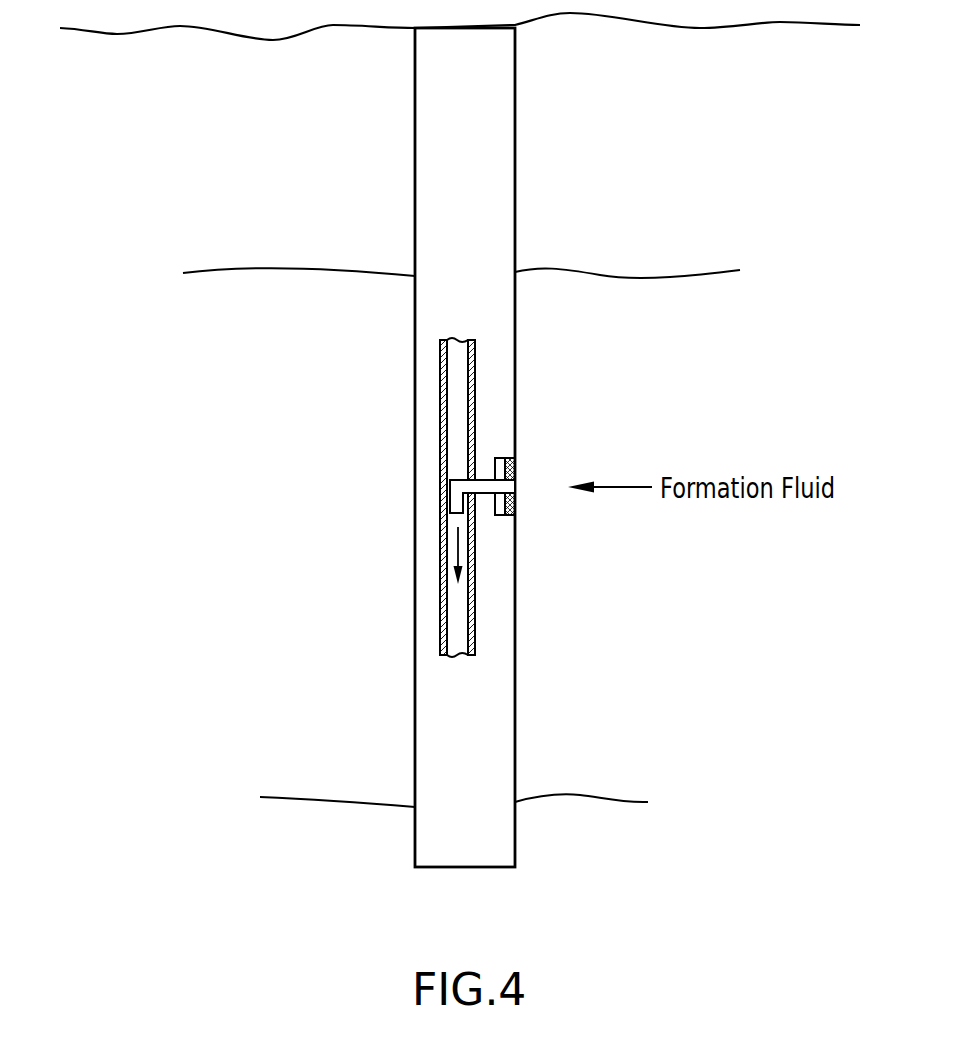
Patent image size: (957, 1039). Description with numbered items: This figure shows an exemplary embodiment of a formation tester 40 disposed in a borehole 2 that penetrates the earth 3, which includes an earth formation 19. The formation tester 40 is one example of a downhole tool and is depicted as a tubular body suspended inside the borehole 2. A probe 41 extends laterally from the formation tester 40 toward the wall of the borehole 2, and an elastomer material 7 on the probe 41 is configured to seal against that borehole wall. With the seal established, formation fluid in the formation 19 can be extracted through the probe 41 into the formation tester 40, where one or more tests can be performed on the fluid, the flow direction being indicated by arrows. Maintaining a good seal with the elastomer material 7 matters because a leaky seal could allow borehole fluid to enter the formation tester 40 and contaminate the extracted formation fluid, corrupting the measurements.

The borehole 2 is at (415, 173).
The earth 3 is at (192, 154).
The earth formation 19 is at (292, 568).
The formation tester 40 is at (443, 380).
The probe 41 is at (502, 463).
The elastomer material 7 is at (510, 502).